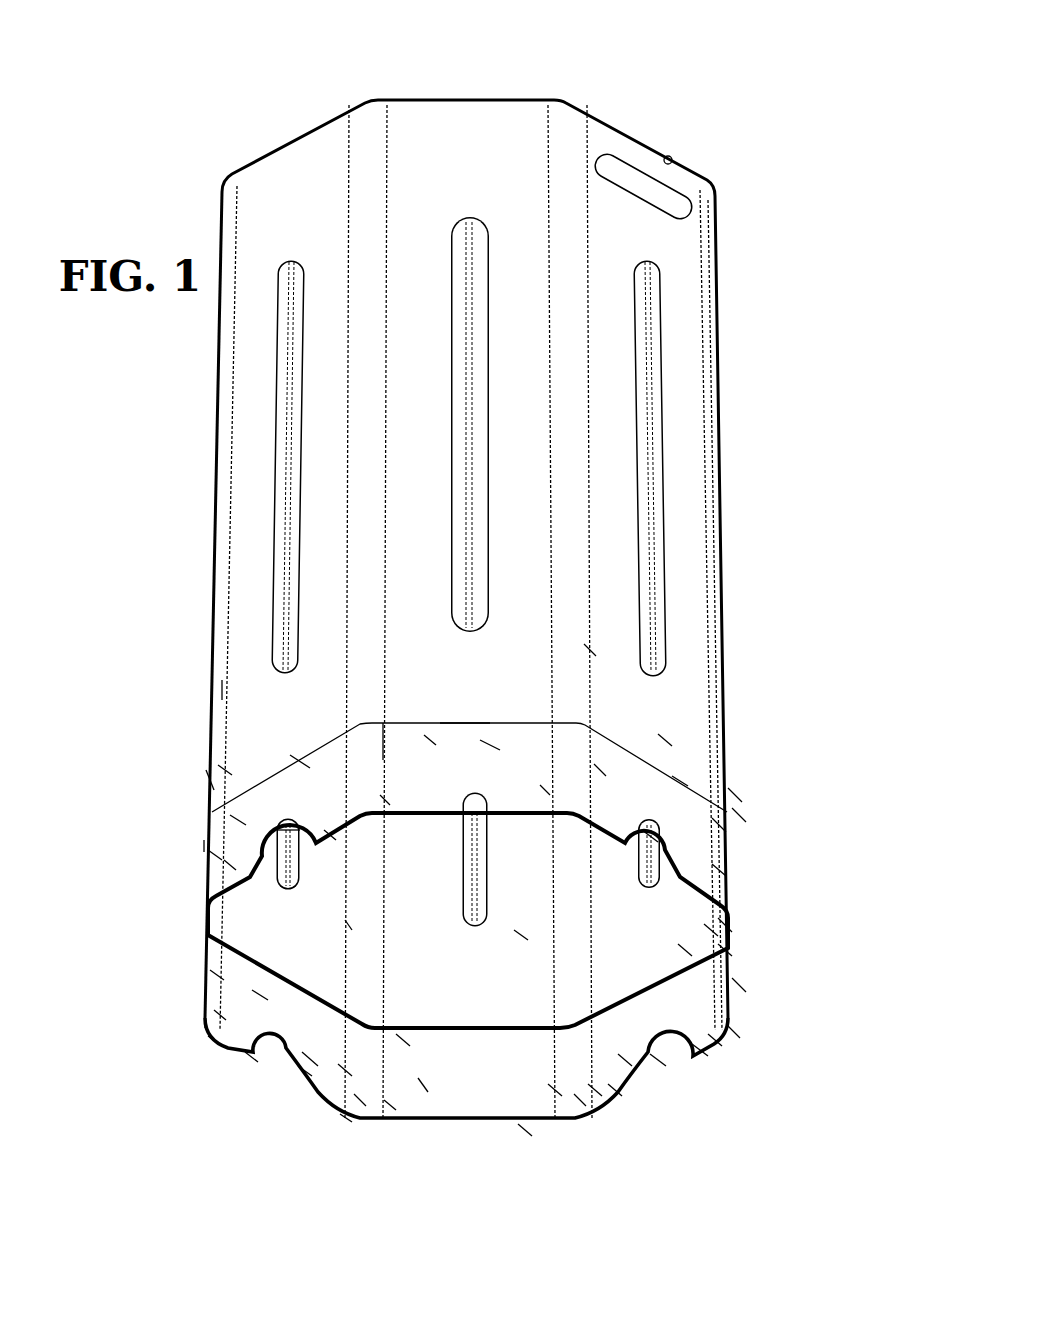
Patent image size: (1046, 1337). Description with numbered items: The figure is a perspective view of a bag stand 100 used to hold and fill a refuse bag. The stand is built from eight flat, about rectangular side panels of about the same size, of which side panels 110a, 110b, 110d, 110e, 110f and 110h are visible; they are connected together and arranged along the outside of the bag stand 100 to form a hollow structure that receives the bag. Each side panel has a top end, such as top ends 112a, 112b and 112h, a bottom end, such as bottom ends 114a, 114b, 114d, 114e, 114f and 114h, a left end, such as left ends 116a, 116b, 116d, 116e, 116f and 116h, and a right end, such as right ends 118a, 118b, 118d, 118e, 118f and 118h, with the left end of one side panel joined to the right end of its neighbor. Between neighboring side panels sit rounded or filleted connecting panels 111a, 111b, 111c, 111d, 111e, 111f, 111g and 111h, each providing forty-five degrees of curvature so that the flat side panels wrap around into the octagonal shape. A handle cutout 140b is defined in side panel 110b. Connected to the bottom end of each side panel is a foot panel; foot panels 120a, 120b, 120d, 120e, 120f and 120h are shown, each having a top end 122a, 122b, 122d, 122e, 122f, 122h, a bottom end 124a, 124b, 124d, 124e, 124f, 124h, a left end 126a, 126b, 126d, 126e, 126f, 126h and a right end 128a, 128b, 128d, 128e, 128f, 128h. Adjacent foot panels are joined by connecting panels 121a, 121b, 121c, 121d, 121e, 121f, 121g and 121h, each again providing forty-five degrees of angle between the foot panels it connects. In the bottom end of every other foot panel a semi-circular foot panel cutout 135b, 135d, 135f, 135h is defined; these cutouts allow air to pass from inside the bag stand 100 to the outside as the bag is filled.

The bag stand 100 is at (176, 131).
The side panel 110a is at (483, 128).
The side panel 110b is at (678, 250).
The side panel 110d is at (673, 953).
The side panel 110e is at (478, 1107).
The side panel 110f is at (305, 1010).
The side panel 110h is at (303, 173).
The connecting panel 111a is at (568, 122).
The connecting panel 111b is at (708, 187).
The connecting panel 111c is at (720, 922).
The connecting panel 111d is at (607, 1105).
The connecting panel 111e is at (374, 1010).
The connecting panel 111f is at (212, 936).
The connecting panel 111g is at (215, 767).
The connecting panel 111h is at (372, 118).
The top end of side panel 112a is at (410, 110).
The top end of side panel 112b is at (672, 155).
The top end of side panel 112h is at (255, 170).
The bottom end of side panel 114a is at (458, 723).
The bottom end of side panel 114b is at (652, 765).
The bottom end of side panel 114d is at (687, 1013).
The bottom end of side panel 114e is at (430, 1022).
The bottom end of side panel 114f is at (258, 998).
The bottom end of side panel 114h is at (293, 762).
The left end of side panel 116a is at (385, 673).
The left end of side panel 116b is at (597, 648).
The left end of side panel 116d is at (713, 925).
The left end of side panel 116e is at (548, 935).
The left end of side panel 116f is at (345, 932).
The left end of side panel 116h is at (228, 688).
The right end of side panel 118a is at (545, 573).
The right end of side panel 118b is at (707, 618).
The right end of side panel 118d is at (593, 927).
The right end of side panel 118e is at (385, 957).
The right end of side panel 118f is at (228, 920).
The right end of side panel 118h is at (347, 622).
The foot panel 120a is at (487, 745).
The foot panel 120b is at (668, 800).
The foot panel 120d is at (697, 1038).
The foot panel 120e is at (525, 1107).
The foot panel 120f is at (315, 1090).
The foot panel 120h is at (237, 820).
The connecting panel 121a is at (570, 818).
The connecting panel 121b is at (727, 870).
The connecting panel 121c is at (722, 1040).
The connecting panel 121d is at (588, 1117).
The connecting panel 121e is at (352, 1120).
The connecting panel 121f is at (212, 1012).
The connecting panel 121g is at (210, 846).
The connecting panel 121h is at (368, 824).
The top end of foot panel 122a is at (433, 725).
The top end of foot panel 122b is at (640, 768).
The top end of foot panel 122d is at (715, 1035).
The top end of foot panel 122e is at (468, 1033).
The top end of foot panel 122f is at (215, 1000).
The top end of foot panel 122h is at (284, 825).
The bottom end of foot panel 124a is at (463, 813).
The bottom end of foot panel 124b is at (715, 848).
The bottom end of foot panel 124d is at (622, 1063).
The bottom end of foot panel 124e is at (412, 1117).
The bottom end of foot panel 124f is at (217, 1037).
The bottom end of foot panel 124h is at (243, 858).
The left end of foot panel 126a is at (366, 800).
The left end of foot panel 126b is at (598, 778).
The left end of foot panel 126d is at (740, 988).
The left end of foot panel 126e is at (553, 1090).
The left end of foot panel 126f is at (343, 1070).
The left end of foot panel 126h is at (230, 865).
The right end of foot panel 128a is at (548, 790).
The right end of foot panel 128b is at (712, 855).
The right end of foot panel 128d is at (590, 1098).
The right end of foot panel 128e is at (362, 1103).
The right end of foot panel 128f is at (228, 977).
The right end of foot panel 128h is at (343, 810).
The foot panel cutout 135b is at (675, 832).
The foot panel cutout 135d is at (653, 1050).
The foot panel cutout 135f is at (262, 1056).
The foot panel cutout 135h is at (216, 770).
The handle cutout 140b is at (625, 160).